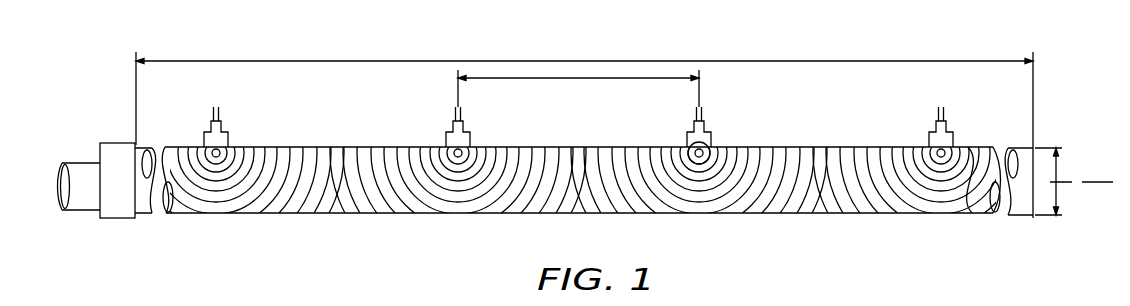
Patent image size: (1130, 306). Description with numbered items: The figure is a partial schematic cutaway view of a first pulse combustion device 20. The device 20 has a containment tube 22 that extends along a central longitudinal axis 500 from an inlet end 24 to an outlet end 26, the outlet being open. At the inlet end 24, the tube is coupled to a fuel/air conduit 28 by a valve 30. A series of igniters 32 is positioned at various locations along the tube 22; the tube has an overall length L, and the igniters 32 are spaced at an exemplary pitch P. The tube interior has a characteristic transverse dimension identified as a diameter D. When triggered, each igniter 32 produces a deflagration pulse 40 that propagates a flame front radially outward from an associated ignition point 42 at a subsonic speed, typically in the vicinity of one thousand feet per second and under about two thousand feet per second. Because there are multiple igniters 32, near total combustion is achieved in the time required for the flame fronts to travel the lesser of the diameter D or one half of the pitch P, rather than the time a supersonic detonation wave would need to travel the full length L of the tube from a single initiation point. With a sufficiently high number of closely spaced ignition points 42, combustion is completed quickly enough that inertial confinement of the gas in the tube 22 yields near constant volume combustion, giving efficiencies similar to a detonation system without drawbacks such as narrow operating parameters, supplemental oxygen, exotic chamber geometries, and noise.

The device 20 is at (692, 47).
The containment tube 22 is at (395, 215).
The inlet end 24 is at (139, 227).
The outlet end 26 is at (1039, 226).
The fuel/air conduit 28 is at (82, 163).
The valve 30 is at (108, 150).
The igniters 32 is at (212, 128).
The deflagration pulse 40 is at (834, 192).
The ignition point 42 is at (710, 162).
The central longitudinal axis 500 is at (1085, 182).
The overall length L is at (858, 62).
The pitch P is at (598, 78).
The diameter D is at (1060, 186).